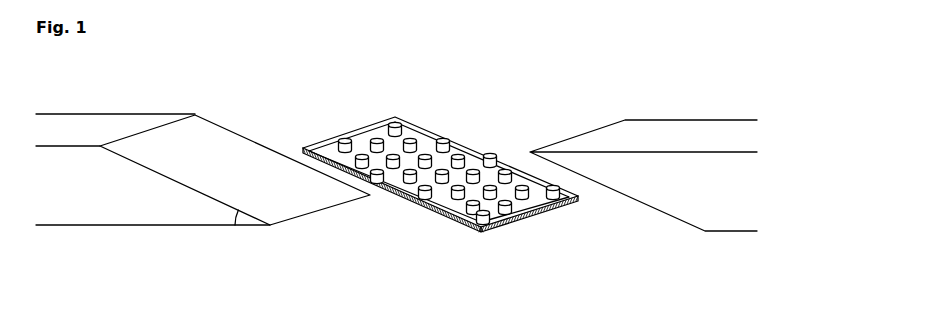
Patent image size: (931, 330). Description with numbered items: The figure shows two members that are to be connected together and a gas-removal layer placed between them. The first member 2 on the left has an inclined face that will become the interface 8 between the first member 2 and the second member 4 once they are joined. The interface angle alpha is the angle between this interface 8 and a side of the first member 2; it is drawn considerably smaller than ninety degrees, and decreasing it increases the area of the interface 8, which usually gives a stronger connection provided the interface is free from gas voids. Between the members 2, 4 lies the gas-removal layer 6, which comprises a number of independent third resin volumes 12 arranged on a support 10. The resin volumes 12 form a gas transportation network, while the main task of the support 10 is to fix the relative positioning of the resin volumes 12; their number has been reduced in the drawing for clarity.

The first member 2 is at (67, 199).
The second member 4 is at (710, 204).
The gas-removal layer 6 is at (440, 172).
The interface 8 is at (247, 199).
The support 10 is at (528, 208).
The independent third resin volumes 12 is at (443, 140).
The interface angle alpha is at (228, 214).